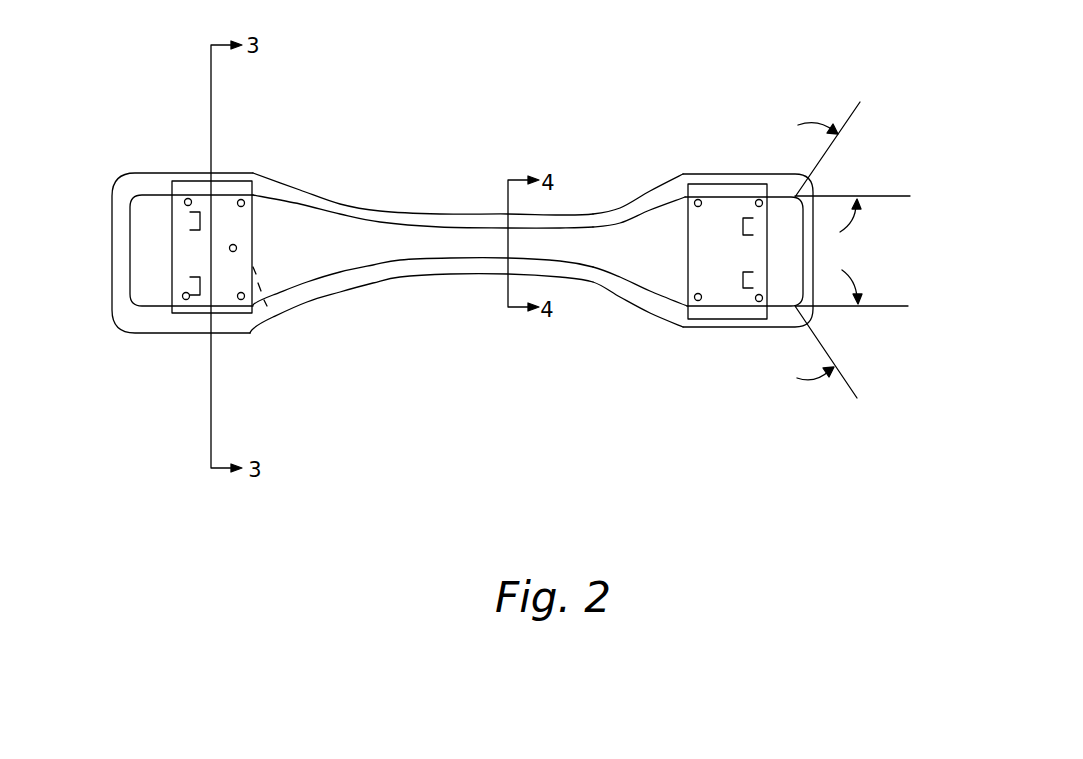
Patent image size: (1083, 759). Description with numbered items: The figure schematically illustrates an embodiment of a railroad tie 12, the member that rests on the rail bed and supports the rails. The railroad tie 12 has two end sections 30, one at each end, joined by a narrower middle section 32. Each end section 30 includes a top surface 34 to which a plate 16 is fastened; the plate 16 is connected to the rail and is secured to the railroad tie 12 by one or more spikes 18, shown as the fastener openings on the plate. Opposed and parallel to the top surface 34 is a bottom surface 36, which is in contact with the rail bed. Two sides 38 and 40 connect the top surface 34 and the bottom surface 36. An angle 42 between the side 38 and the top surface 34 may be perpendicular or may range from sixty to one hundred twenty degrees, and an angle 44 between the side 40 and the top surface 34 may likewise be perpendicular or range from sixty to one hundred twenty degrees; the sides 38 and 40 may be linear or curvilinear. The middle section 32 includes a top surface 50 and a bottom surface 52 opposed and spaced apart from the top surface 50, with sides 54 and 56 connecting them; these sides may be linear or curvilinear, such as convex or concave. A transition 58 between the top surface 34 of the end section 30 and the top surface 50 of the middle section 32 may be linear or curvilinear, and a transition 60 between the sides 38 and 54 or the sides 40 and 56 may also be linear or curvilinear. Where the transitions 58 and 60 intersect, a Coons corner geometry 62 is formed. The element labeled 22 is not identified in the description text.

The railroad tie 12 is at (108, 337).
The plate 16 is at (148, 262).
The spike 18 is at (195, 220).
The fastener hole 22 is at (186, 198).
The end section 30 is at (745, 172).
The middle section 32 is at (485, 213).
The top surface 34 is at (162, 292).
The bottom surface 36 is at (267, 318).
The side 38 is at (240, 179).
The side 40 is at (190, 327).
The angle 42 is at (852, 167).
The angle 44 is at (851, 334).
The top surface 50 is at (537, 240).
The bottom surface 52 is at (630, 269).
The side 54 is at (403, 217).
The side 56 is at (403, 270).
The transition 58 is at (280, 221).
The transition 60 is at (267, 183).
The Coons corner geometry 62 is at (270, 193).